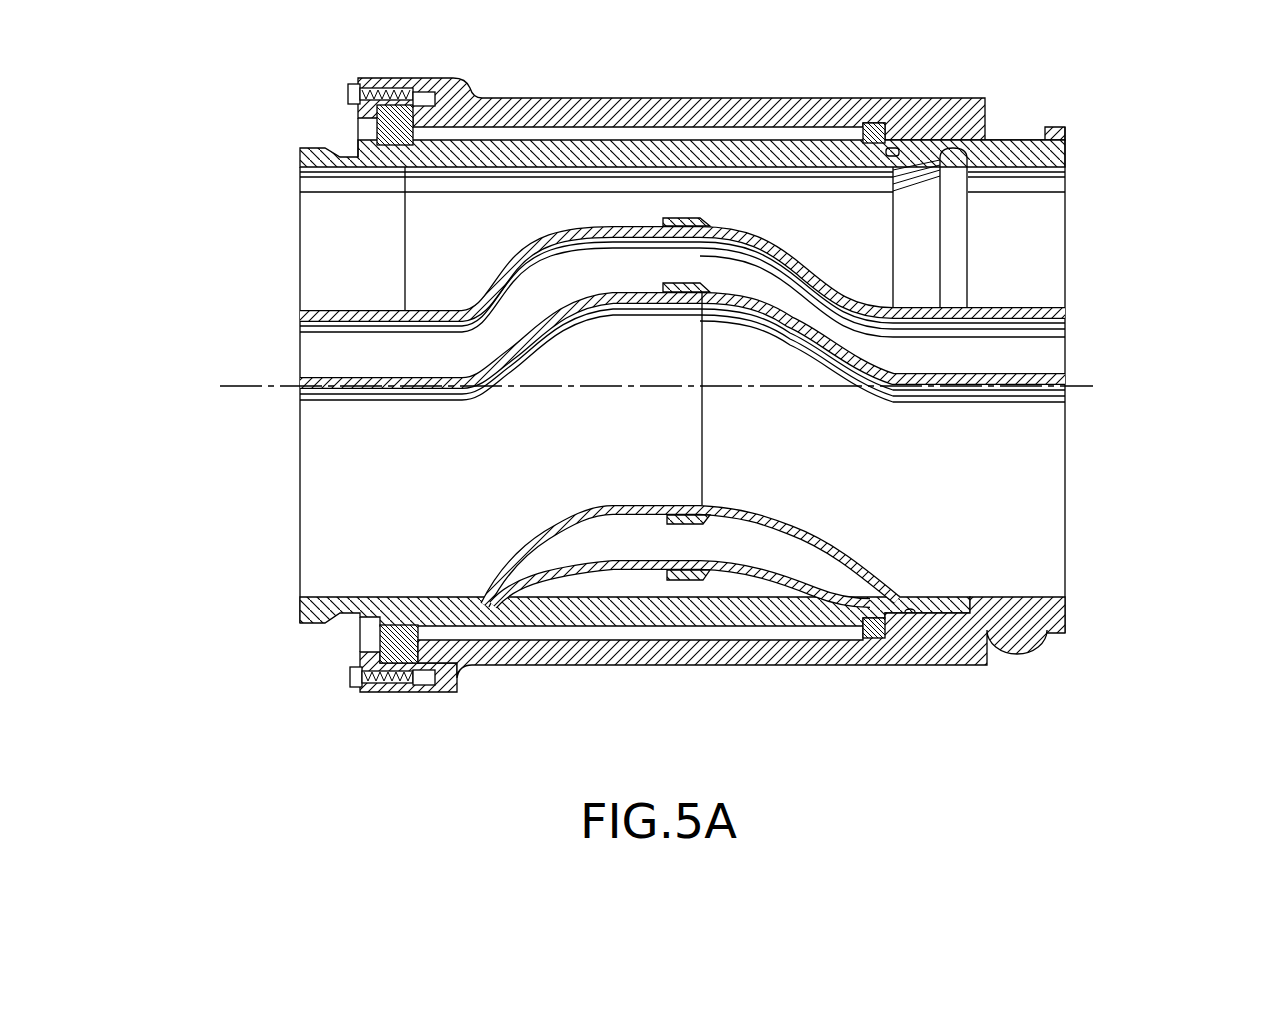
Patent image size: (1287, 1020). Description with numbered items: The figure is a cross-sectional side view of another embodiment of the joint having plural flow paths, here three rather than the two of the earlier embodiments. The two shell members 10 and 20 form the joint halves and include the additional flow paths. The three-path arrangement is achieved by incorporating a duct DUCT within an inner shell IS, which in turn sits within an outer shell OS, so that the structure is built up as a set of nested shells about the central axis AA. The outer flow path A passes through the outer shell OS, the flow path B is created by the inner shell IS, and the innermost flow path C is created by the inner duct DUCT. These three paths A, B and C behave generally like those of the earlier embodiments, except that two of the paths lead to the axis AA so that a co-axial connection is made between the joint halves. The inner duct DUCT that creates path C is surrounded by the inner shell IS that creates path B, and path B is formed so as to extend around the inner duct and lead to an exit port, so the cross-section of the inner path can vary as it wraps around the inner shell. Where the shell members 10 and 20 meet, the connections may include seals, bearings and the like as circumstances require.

The shell member 10 is at (385, 607).
The shell member 20 is at (947, 643).
The flow path A is at (242, 248).
The flow path B is at (380, 350).
The flow path C is at (557, 438).
The axis AA is at (261, 389).
The inner shell IS is at (1102, 297).
The outer shell OS is at (1190, 167).
The duct DUCT is at (1040, 543).